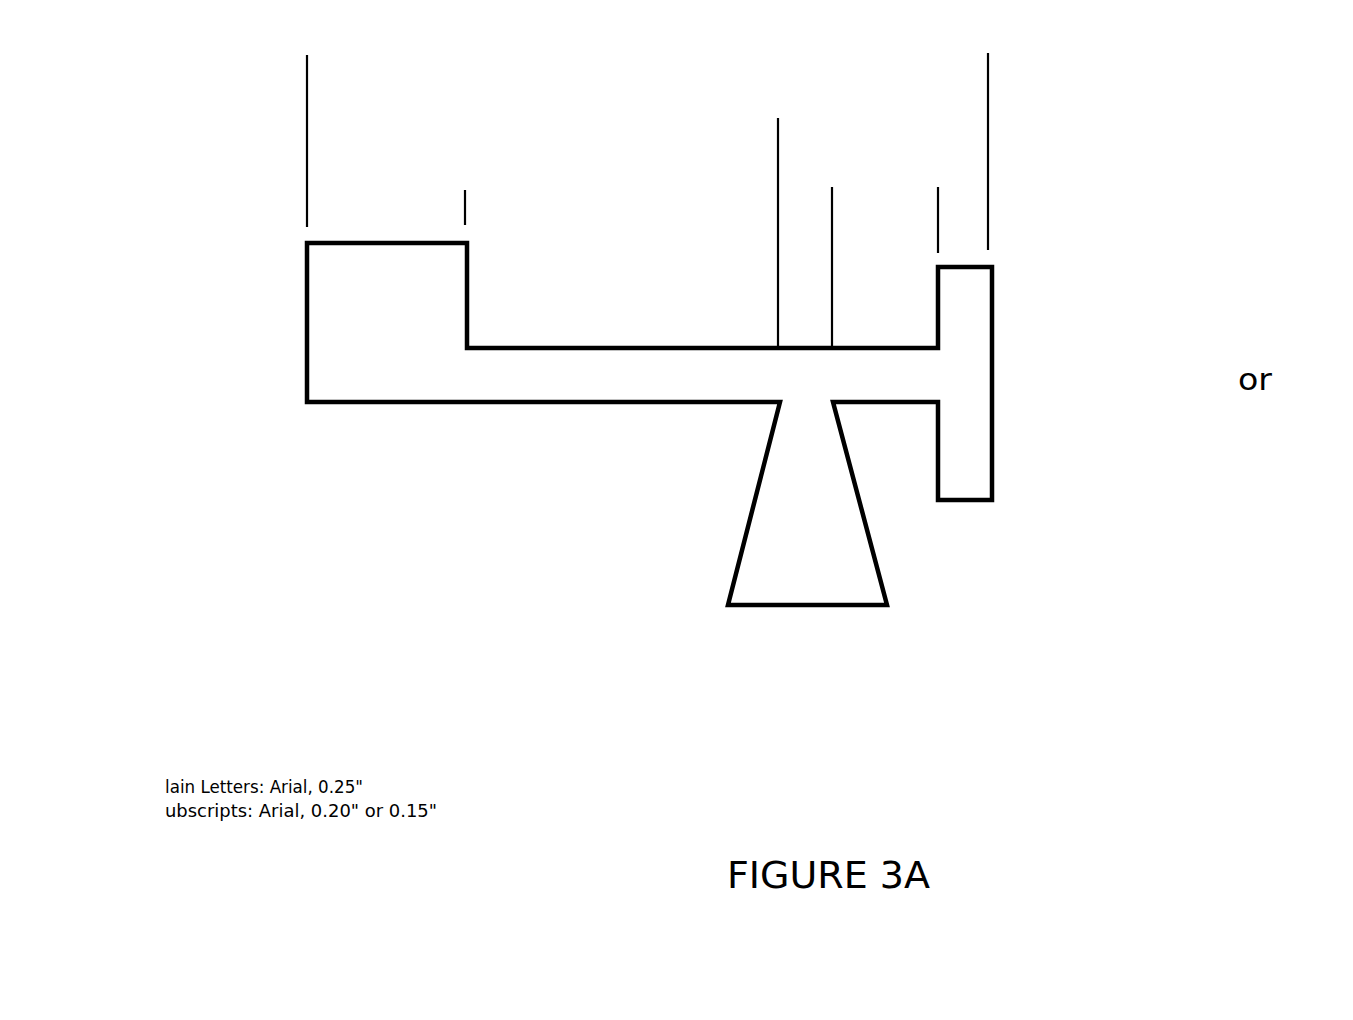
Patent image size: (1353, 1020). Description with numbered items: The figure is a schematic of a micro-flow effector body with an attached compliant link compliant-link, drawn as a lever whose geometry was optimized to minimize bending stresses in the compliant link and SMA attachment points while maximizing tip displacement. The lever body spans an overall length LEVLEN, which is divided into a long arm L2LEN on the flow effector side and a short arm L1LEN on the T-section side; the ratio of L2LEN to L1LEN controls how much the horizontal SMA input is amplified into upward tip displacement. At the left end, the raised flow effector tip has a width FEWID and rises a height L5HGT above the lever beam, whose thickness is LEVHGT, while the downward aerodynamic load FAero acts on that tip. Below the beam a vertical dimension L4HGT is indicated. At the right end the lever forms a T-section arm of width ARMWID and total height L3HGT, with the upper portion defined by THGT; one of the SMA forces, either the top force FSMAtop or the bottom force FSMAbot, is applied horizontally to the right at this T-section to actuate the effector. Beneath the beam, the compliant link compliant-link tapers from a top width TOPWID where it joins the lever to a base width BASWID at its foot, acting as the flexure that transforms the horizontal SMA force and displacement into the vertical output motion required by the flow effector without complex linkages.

The lever length LEVLEN is at (988, 80).
The lever arm length L2LEN is at (778, 148).
The lever arm length L1LEN is at (988, 148).
The flow effector width FEWID is at (465, 202).
The compliant link top width TOPWID is at (832, 202).
The arm width ARMWID is at (938, 200).
The lever height L5HGT is at (296, 243).
The lever height L4HGT is at (306, 607).
The T-section height THGT is at (1172, 267).
The lever height LEVHGT is at (1095, 397).
The arm height L3HGT is at (1132, 267).
The compliant link base width BASWID is at (912, 643).
The compliant link compliant-link is at (669, 501).
The aerodynamic load FAero is at (290, 77).
The top SMA force FSMAtop is at (1272, 267).
The bottom SMA force FSMAbot is at (1268, 498).
The micro-flow effector body is at (649, 424).